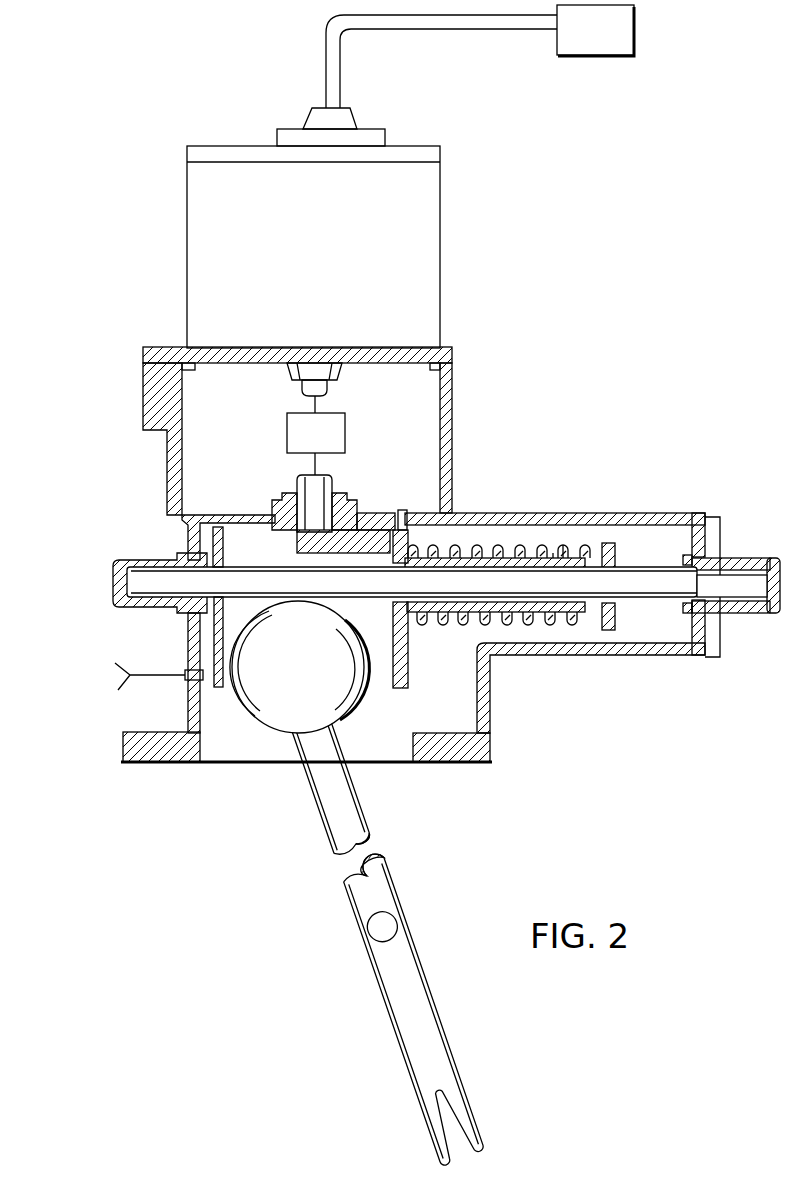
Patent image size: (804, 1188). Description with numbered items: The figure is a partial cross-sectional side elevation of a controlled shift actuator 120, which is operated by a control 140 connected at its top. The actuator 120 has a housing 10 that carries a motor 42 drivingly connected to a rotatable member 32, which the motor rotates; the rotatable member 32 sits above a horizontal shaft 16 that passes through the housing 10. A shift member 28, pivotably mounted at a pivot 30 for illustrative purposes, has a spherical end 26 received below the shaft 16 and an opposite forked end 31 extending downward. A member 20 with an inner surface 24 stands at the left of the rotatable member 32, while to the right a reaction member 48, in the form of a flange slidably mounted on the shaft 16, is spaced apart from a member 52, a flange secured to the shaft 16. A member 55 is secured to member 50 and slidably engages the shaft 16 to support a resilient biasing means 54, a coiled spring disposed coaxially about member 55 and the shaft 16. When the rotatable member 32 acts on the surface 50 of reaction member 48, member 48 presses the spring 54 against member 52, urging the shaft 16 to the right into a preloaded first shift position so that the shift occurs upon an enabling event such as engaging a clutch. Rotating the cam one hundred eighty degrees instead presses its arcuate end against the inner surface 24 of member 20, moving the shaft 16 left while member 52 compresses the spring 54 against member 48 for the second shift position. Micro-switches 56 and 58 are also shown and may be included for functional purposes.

The housing 10 is at (447, 428).
The shaft 16 is at (637, 580).
The member 20 is at (215, 636).
The inner surface 24 is at (223, 540).
The spherical end 26 is at (283, 725).
The shift member 28 is at (360, 805).
The pivot 30 is at (396, 925).
The forked end 31 is at (476, 1141).
The rotatable member 32 is at (363, 540).
The motor 42 is at (425, 194).
The reaction member 48 is at (408, 657).
The surface 50 is at (396, 678).
The member 52 is at (612, 630).
The resilient biasing means 54 is at (497, 553).
The member 55 is at (553, 553).
The micro-switch 56 is at (405, 510).
The micro-switch 58 is at (145, 686).
The actuator 120 is at (166, 314).
The control 140 is at (517, 30).